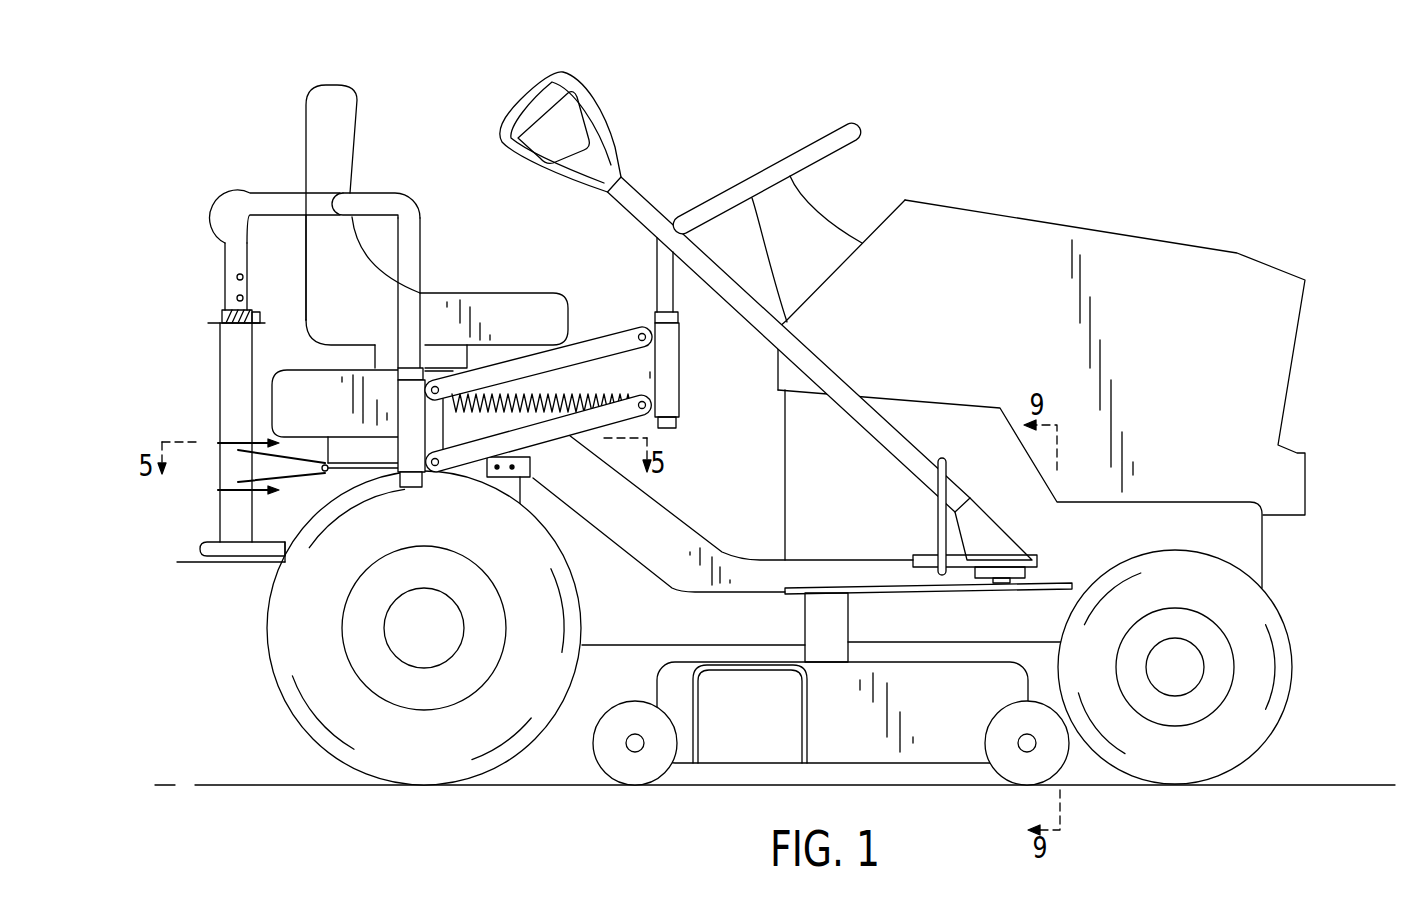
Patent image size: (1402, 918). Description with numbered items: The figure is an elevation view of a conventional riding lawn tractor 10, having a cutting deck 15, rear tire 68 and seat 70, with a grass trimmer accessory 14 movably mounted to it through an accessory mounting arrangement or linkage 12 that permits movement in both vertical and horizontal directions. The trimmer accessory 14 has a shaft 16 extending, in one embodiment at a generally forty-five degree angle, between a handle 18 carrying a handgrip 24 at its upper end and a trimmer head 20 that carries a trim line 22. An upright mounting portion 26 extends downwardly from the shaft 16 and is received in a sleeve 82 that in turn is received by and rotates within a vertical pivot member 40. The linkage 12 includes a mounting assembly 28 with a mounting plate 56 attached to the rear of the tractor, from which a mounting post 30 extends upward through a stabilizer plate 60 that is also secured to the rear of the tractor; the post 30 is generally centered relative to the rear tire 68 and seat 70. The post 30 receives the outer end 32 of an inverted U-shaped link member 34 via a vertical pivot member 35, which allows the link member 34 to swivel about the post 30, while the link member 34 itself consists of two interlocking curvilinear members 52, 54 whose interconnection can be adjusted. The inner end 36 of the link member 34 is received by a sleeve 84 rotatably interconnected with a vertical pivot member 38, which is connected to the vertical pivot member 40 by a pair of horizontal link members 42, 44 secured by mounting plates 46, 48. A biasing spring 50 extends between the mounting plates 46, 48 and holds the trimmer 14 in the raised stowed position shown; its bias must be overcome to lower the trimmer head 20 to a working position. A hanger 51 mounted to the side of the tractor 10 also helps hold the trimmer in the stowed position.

The lawn tractor 10 is at (968, 143).
The linkage 12 is at (205, 207).
The accessory 14 is at (755, 315).
The cutting deck 15 is at (946, 772).
The shaft 16 is at (735, 305).
The handle 18 is at (612, 150).
The trimmer head 20 is at (998, 527).
The trim line 22 is at (1042, 592).
The handgrip 24 is at (532, 104).
The upright mounting portion 26 is at (667, 255).
The mounting assembly 28 is at (211, 579).
The mounting post 30 is at (232, 358).
The outer end 32 is at (228, 284).
The inverted U-shaped link member 34 is at (302, 250).
The vertical pivot member 35 is at (253, 323).
The inner end 36 is at (402, 318).
The vertical pivot member 38 is at (400, 404).
The vertical pivot member 40 is at (673, 362).
The horizontal link member 42 is at (585, 345).
The horizontal link member 44 is at (556, 432).
The mounting plate 46 is at (415, 430).
The mounting plate 48 is at (656, 376).
The biasing spring 50 is at (537, 395).
The hanger 51 is at (937, 523).
The curvilinear member 52 is at (291, 210).
The curvilinear member 54 is at (365, 203).
The mounting plate 56 is at (217, 566).
The stabilizer plate 60 is at (219, 465).
The rear tire 68 is at (283, 655).
The seat 70 is at (343, 100).
The sleeve 82 is at (676, 318).
The sleeve 84 is at (420, 370).